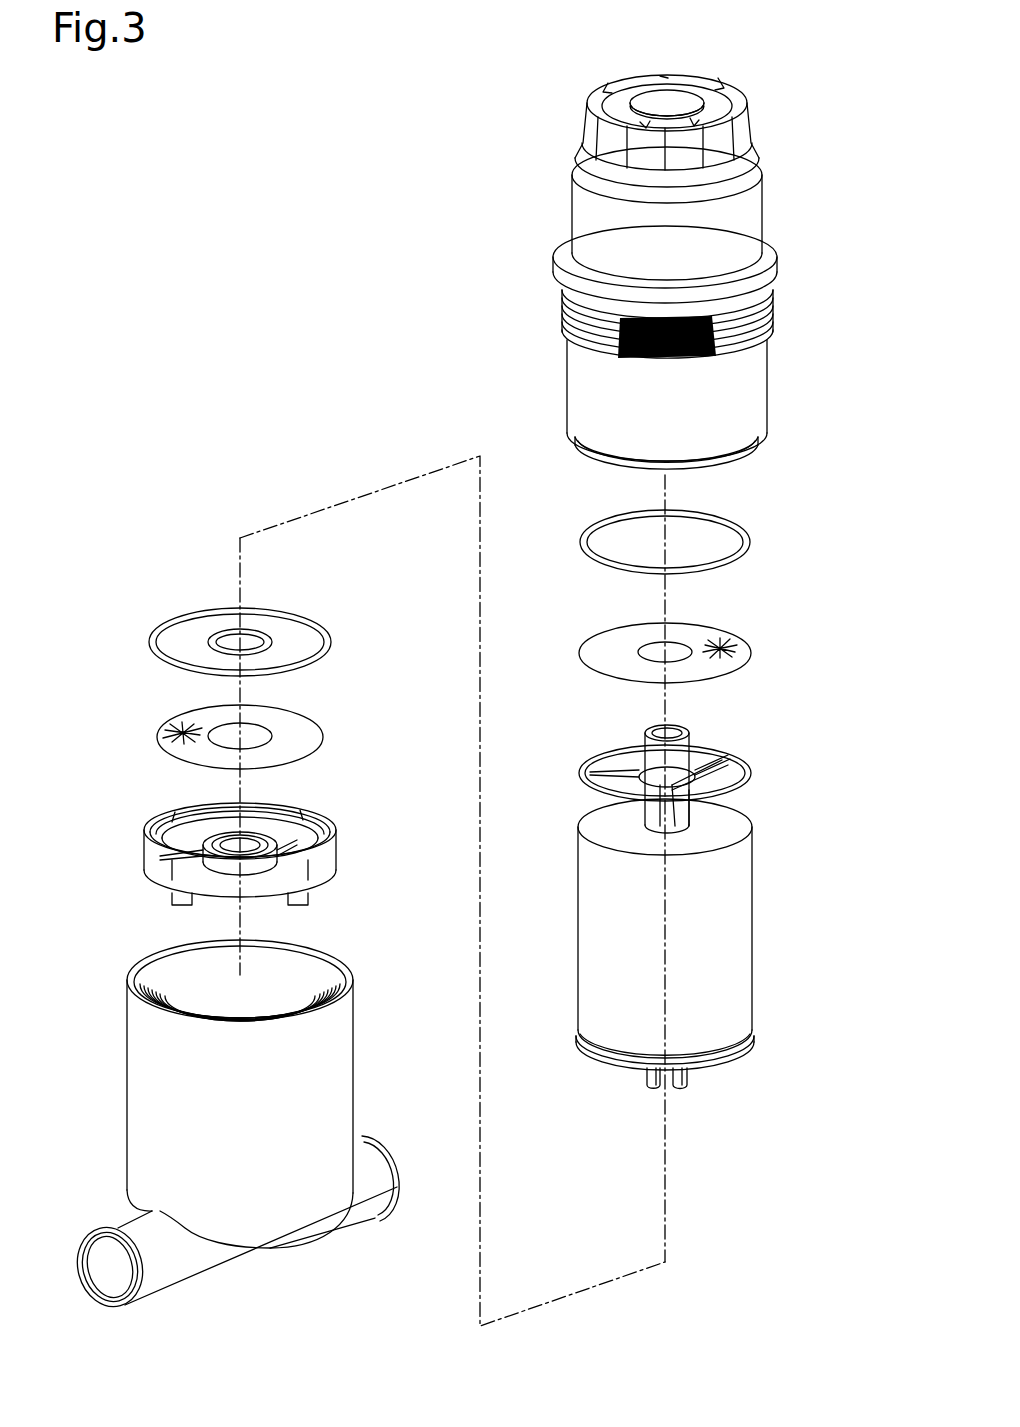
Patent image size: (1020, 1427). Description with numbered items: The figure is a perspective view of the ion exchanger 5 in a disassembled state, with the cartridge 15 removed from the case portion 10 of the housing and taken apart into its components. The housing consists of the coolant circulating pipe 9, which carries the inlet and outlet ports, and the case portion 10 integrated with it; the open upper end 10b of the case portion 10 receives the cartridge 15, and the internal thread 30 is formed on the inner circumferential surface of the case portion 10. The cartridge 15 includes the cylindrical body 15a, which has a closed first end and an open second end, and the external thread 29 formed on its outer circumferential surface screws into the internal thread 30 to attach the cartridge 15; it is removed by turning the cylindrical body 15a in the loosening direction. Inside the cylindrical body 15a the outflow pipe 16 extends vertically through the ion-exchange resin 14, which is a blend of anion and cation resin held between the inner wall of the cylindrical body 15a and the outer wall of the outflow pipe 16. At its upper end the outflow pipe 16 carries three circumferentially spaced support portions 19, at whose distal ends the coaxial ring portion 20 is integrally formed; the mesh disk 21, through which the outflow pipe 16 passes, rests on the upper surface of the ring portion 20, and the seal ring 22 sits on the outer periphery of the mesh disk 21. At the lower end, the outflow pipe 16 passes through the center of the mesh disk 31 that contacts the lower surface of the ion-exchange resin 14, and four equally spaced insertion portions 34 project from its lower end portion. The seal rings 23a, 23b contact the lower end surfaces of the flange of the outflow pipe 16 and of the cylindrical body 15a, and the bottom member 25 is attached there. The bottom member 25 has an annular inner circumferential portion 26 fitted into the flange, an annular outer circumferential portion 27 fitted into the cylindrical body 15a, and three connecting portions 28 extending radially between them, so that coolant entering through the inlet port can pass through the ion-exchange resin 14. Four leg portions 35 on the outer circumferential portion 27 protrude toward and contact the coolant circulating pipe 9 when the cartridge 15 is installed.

The ion exchanger 5 is at (280, 262).
The coolant circulating pipe 9 is at (122, 1230).
The case portion 10 is at (242, 1110).
The open upper end of housing 10b is at (318, 962).
The ion-exchange resin 14 is at (698, 956).
The cartridge 15 is at (672, 272).
The cylindrical body 15a is at (769, 375).
The outflow pipe 16 is at (648, 738).
The support portions 19 is at (612, 766).
The ring portion 20 is at (697, 763).
The mesh disk 21 is at (750, 648).
The seal ring 22 is at (750, 535).
The seal ring 23a is at (218, 632).
The seal ring 23b is at (283, 624).
The bottom member 25 is at (266, 854).
The inner circumferential portion 26 is at (218, 838).
The outer circumferential portion 27 is at (315, 828).
The connecting portions 28 is at (152, 840).
The external thread 29 is at (770, 303).
The internal thread 30 is at (172, 986).
The mesh disk 31 is at (322, 728).
The insertion portions 34 is at (647, 1080).
The leg portions 35 is at (190, 906).